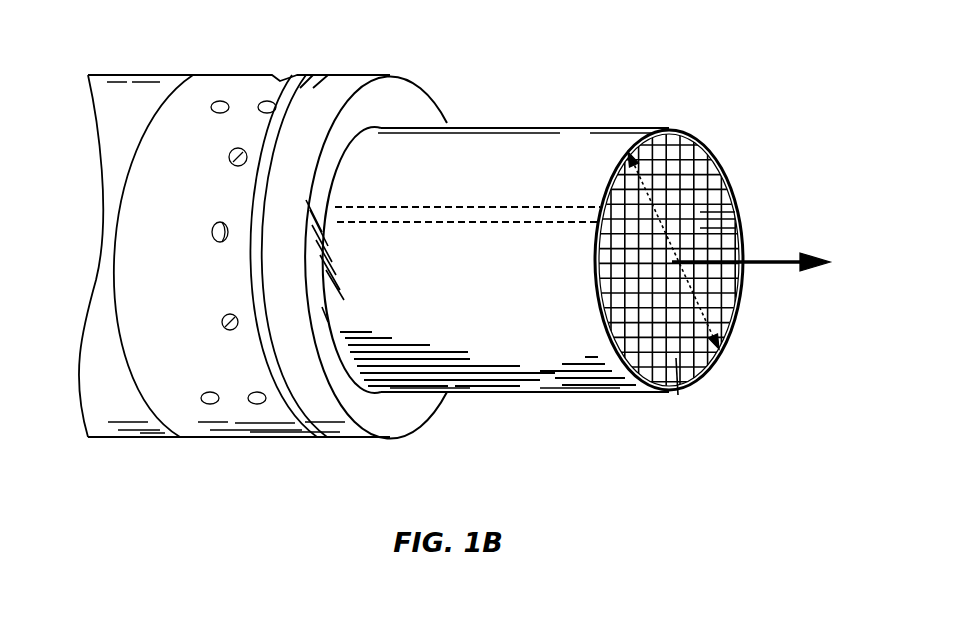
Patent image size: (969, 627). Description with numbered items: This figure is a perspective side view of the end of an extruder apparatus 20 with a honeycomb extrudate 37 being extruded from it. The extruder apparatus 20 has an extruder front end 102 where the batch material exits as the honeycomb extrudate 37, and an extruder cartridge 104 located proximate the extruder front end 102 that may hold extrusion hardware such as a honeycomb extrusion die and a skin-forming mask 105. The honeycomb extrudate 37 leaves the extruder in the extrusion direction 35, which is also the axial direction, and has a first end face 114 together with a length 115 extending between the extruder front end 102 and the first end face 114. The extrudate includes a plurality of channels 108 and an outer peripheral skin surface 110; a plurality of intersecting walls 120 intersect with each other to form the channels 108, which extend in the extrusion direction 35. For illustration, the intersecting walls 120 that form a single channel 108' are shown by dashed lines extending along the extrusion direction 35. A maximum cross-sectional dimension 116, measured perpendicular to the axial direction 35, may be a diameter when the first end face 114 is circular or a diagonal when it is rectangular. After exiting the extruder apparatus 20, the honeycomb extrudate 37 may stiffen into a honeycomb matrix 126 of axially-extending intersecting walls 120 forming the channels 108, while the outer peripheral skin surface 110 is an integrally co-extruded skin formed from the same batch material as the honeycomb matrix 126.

The extruder apparatus 20 is at (240, 62).
The extruder front end 102 is at (332, 62).
The skin-forming mask 105 is at (358, 75).
The extruder cartridge 104 is at (290, 440).
The outer peripheral skin surface 110 is at (526, 331).
The honeycomb extrudate 37 is at (465, 408).
The single channel 108' is at (467, 191).
The length 115 is at (668, 130).
The honeycomb matrix 126 is at (694, 137).
The first end face 114 is at (732, 175).
The channels 108 is at (751, 208).
The extrusion direction 35 is at (773, 256).
The maximum cross-sectional dimension 116 is at (705, 318).
The intersecting walls 120 is at (676, 358).